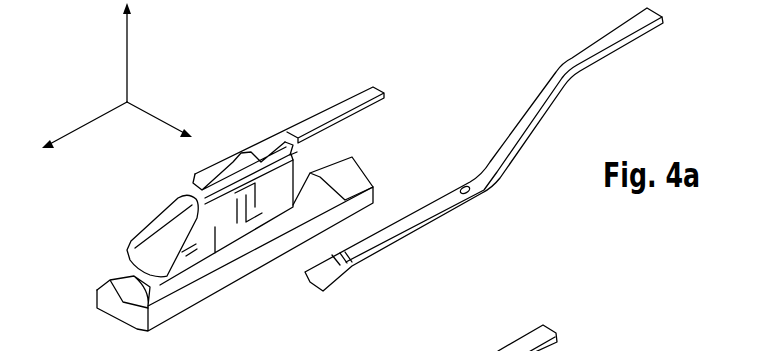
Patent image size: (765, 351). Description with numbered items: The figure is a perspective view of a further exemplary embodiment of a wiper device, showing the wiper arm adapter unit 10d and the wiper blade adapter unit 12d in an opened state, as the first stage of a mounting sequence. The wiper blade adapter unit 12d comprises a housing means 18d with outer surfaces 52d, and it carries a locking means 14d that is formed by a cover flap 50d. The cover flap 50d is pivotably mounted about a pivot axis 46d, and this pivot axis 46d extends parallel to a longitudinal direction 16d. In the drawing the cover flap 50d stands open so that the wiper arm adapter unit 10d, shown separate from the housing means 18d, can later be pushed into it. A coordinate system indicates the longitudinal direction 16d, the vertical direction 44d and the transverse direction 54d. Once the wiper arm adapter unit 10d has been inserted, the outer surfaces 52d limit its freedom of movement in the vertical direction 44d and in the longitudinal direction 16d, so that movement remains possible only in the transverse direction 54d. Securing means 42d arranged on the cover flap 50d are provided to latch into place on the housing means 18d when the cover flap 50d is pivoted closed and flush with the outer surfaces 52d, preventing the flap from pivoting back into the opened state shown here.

The wiper arm adapter unit 10d is at (625, 74).
The wiper blade adapter unit 12d is at (114, 234).
The locking means 14d is at (211, 145).
The longitudinal direction 16d is at (92, 120).
The housing means 18d is at (158, 228).
The securing means 42d is at (345, 103).
The vertical direction 44d is at (127, 58).
The pivot axis 46d is at (289, 124).
The cover flap 50d is at (256, 150).
The outer surfaces 52d is at (190, 257).
The transverse direction 54d is at (155, 123).